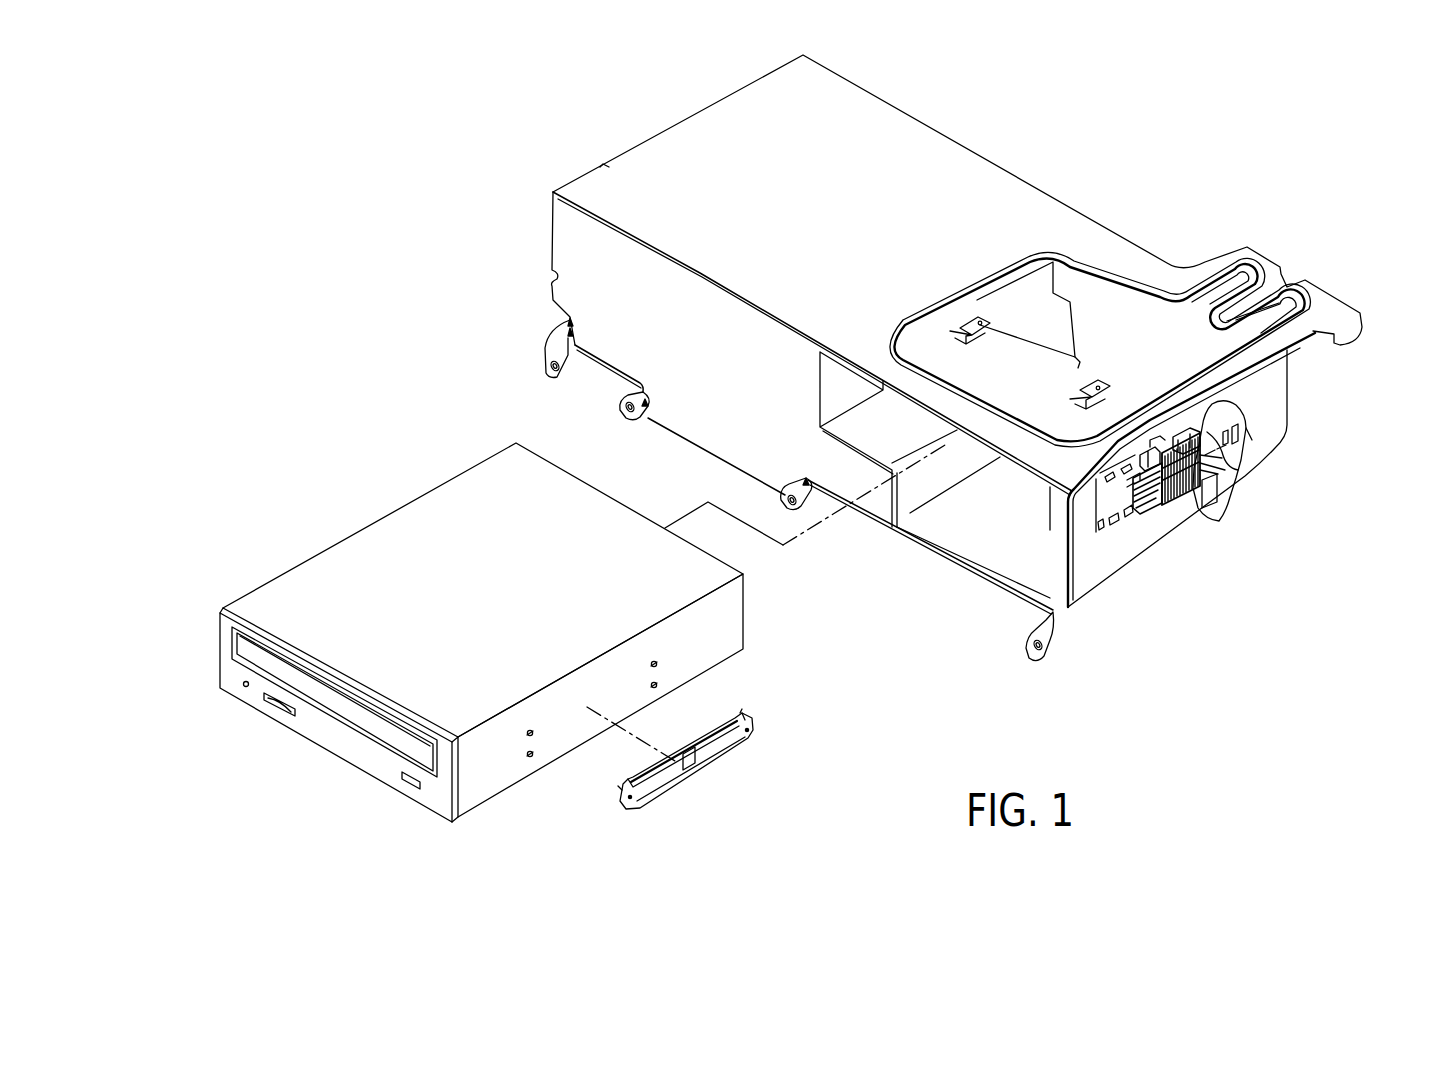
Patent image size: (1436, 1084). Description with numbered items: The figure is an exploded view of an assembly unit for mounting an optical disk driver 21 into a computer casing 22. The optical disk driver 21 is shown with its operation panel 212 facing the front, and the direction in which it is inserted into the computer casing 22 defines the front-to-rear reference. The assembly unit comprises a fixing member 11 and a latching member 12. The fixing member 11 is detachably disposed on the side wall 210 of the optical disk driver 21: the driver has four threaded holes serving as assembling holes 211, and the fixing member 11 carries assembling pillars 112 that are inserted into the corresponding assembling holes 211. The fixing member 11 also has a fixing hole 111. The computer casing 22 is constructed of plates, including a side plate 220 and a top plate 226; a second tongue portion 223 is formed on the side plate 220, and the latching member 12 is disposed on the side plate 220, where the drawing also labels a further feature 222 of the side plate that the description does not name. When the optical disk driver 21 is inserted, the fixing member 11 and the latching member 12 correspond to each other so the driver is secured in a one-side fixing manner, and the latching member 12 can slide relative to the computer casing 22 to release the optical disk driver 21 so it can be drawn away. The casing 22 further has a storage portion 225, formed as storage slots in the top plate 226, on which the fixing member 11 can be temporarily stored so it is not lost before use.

The fixing member 11 is at (748, 756).
The fixing hole 111 is at (692, 758).
The assembling pillars 112 is at (620, 803).
The latching member 12 is at (1245, 481).
The optical disk driver 21 is at (377, 511).
The side wall 210 is at (730, 614).
The assembling holes 211 is at (527, 752).
The operation panel 212 is at (334, 738).
The computer casing 22 is at (1051, 186).
The side plate 220 is at (1210, 512).
The hooks 222 is at (1160, 450).
The second tongue portion 223 is at (1112, 489).
The storage portion 225 is at (968, 320).
The top plate 226 is at (1027, 353).